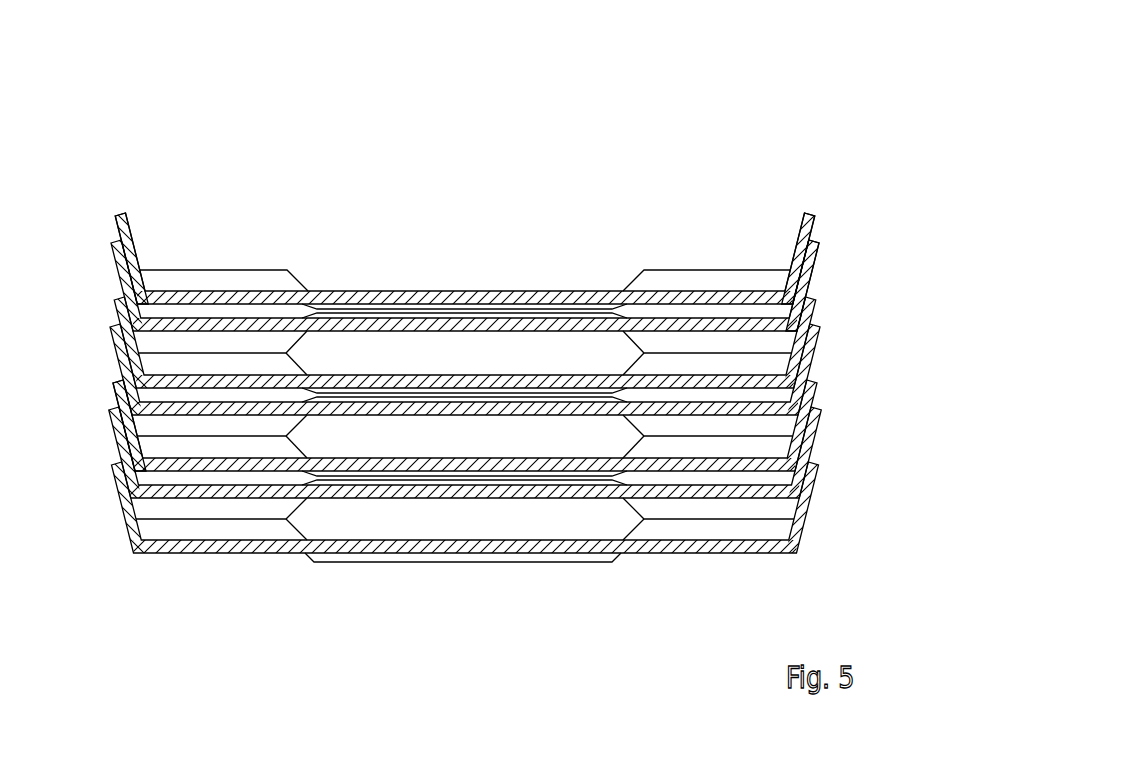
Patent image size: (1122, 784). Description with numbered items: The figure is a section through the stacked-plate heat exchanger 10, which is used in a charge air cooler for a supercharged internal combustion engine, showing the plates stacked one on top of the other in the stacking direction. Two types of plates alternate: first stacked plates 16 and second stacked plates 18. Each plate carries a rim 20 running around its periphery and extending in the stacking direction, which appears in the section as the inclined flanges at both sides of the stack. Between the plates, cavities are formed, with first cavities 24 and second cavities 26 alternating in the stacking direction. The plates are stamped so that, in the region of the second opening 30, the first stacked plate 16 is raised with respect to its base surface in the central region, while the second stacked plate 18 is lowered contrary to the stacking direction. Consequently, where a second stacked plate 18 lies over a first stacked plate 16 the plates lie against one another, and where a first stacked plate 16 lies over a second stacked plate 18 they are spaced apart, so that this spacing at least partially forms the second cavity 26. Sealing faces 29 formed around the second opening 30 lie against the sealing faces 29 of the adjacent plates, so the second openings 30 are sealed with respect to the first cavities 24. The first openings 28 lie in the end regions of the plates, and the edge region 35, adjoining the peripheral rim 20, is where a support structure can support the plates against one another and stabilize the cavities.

The stacked-plate heat exchanger 10 is at (561, 343).
The first stacked plate 16 is at (808, 226).
The second stacked plate 18 is at (810, 262).
The rim 20 is at (127, 403).
The first cavity 24 is at (352, 352).
The second cavity 26 is at (243, 312).
The first opening 28 is at (561, 379).
The sealing face 29 is at (185, 268).
The second opening 30 is at (209, 228).
The edge region 35 is at (762, 207).